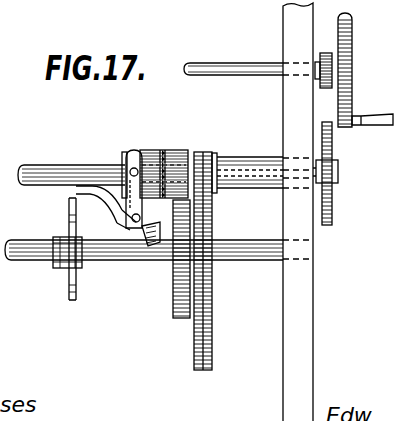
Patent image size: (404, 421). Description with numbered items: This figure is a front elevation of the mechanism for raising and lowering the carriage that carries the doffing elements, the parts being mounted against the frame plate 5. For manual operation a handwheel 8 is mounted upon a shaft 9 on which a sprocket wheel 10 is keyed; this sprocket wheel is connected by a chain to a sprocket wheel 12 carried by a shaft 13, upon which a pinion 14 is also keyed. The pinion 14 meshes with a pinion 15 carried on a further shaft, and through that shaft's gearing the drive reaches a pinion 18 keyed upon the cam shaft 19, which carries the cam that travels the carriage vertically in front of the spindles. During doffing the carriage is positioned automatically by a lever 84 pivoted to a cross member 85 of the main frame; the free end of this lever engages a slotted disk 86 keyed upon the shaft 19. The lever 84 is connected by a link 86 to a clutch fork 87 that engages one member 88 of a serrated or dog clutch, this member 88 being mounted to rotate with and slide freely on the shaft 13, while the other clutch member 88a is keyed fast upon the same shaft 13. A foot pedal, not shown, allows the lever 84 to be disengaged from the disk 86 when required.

The frame plate 5 is at (298, 212).
The handwheel 8 is at (352, 54).
The shaft 9 is at (243, 52).
The sprocket wheel 10 is at (327, 58).
The sprocket wheel 12 is at (332, 212).
The shaft 13 is at (58, 170).
The pinion 14 is at (201, 155).
The pinion 15 is at (212, 218).
The pinion 18 is at (173, 308).
The cam shaft 19 is at (38, 262).
The lever 84 is at (76, 212).
The cross member 85 is at (167, 246).
The slotted disk 86 is at (123, 208).
The clutch fork 87 is at (134, 150).
The clutch member 88 is at (124, 157).
The clutch member 88a is at (177, 152).